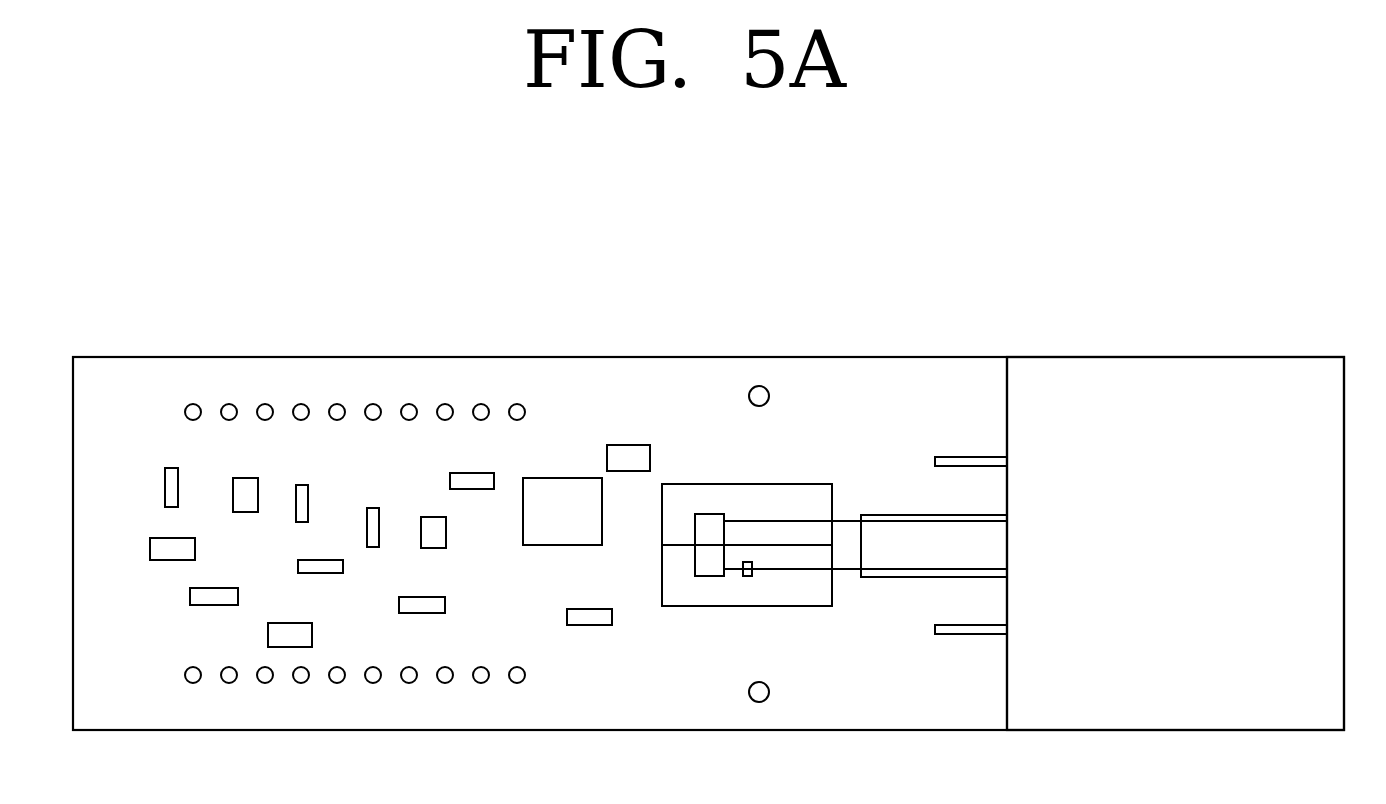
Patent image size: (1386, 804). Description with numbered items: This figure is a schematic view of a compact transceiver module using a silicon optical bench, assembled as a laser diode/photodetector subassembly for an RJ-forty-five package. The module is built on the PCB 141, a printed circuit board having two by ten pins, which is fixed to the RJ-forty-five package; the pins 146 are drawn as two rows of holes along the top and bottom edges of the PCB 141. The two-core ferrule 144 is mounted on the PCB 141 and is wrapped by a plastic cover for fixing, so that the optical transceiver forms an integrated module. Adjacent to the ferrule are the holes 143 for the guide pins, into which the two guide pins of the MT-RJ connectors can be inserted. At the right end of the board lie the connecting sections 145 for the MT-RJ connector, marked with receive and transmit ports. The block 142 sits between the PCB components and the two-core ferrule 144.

The PCB 141 is at (607, 416).
The optical module 142 is at (785, 498).
The holes for the guide pins 143 is at (955, 458).
The 2-core ferrule 144 is at (908, 555).
The connecting sections for the MT-RJ connector 145 is at (1239, 385).
The pins 146 is at (184, 396).